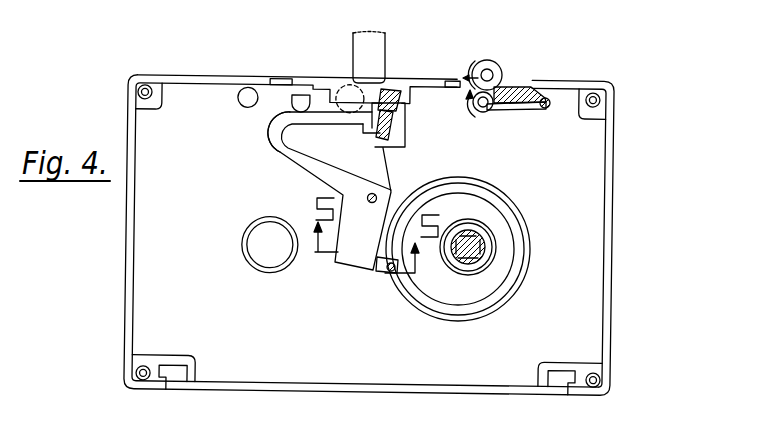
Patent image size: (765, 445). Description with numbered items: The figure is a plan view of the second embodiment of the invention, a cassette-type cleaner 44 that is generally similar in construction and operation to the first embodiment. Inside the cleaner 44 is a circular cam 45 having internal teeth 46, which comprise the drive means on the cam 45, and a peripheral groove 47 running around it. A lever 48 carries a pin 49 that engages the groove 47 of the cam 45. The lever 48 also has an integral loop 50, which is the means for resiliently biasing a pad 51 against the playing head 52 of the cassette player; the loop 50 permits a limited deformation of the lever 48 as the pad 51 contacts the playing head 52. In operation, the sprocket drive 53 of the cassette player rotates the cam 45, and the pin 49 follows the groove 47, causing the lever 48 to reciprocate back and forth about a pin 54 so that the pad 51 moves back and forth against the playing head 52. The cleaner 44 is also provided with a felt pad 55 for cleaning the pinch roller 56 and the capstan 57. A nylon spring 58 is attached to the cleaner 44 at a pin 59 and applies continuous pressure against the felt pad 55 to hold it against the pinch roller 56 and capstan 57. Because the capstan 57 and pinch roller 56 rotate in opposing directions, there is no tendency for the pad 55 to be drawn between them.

The cleaner 44 is at (620, 221).
The cam 45 is at (495, 275).
The internal teeth 46 is at (490, 248).
The peripheral groove 47 is at (448, 312).
The lever 48 is at (332, 178).
The pin 49 is at (388, 280).
The loop 50 is at (268, 137).
The pad 51 is at (400, 88).
The playing head 52 is at (354, 54).
The sprocket drive 53 is at (476, 230).
The pin 54 is at (375, 195).
The felt pad 55 is at (520, 87).
The pinch roller 56 is at (492, 64).
The capstan 57 is at (488, 112).
The nylon spring 58 is at (500, 110).
The pin 59 is at (548, 108).